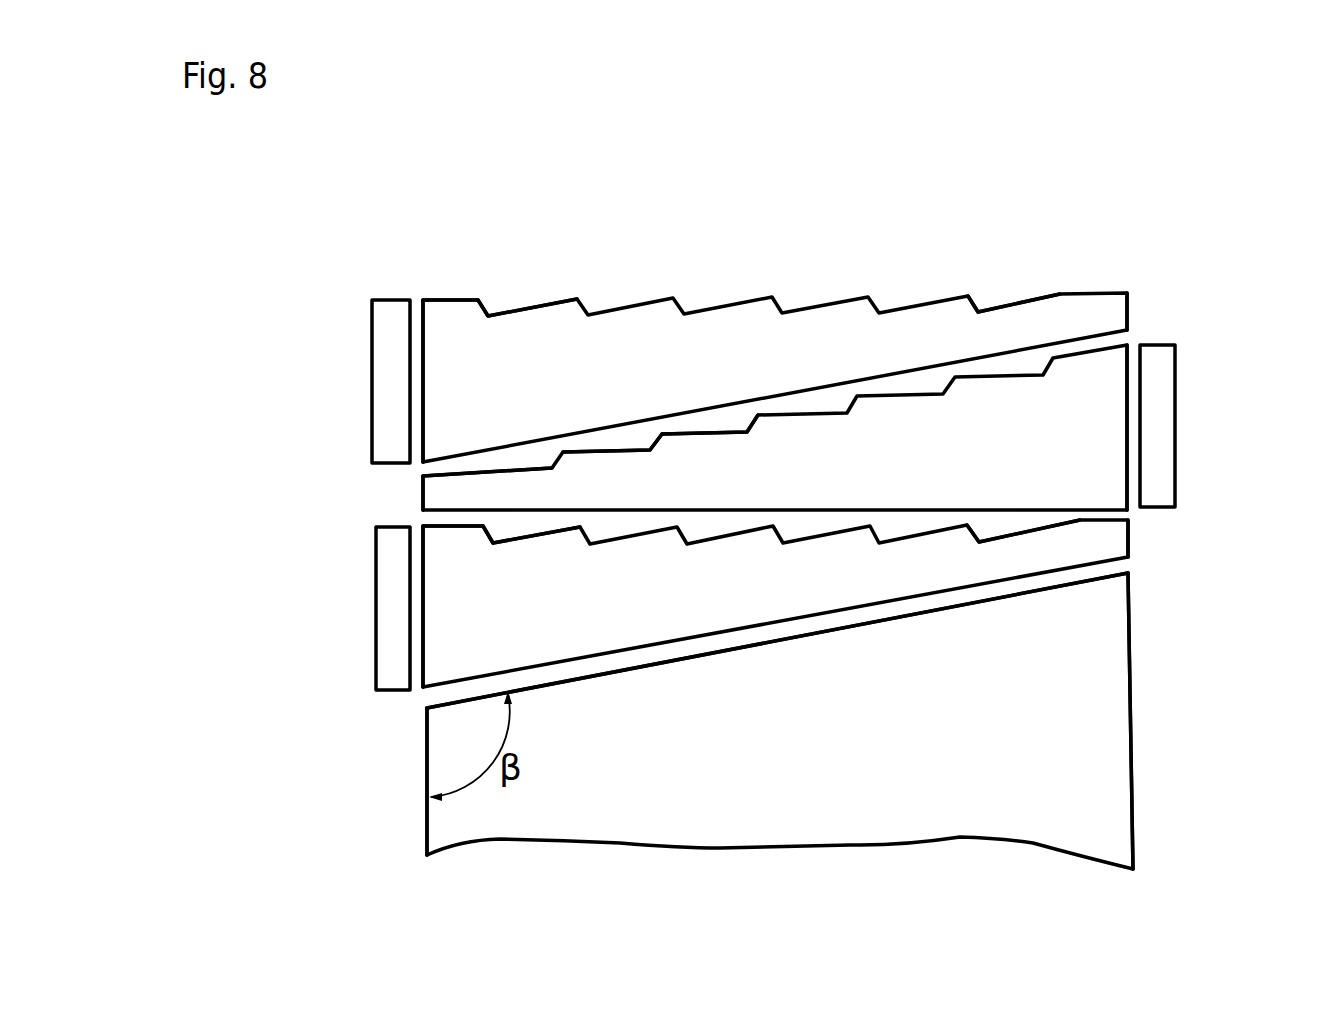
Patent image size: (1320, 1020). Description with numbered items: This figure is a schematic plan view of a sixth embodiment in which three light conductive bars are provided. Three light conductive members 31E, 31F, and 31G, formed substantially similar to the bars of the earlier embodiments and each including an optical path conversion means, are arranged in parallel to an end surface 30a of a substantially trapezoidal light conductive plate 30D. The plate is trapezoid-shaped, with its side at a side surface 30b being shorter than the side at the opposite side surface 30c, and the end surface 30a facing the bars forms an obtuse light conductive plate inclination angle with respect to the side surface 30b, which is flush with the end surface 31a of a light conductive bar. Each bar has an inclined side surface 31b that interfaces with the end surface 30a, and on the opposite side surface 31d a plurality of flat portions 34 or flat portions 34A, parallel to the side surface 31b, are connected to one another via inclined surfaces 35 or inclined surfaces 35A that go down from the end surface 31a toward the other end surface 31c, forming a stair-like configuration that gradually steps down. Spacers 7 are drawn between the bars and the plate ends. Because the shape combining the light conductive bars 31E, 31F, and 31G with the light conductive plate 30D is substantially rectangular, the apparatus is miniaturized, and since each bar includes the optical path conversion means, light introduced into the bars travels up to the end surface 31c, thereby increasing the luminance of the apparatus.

The spacer 7 is at (386, 325).
The light conductive plate 30D is at (1100, 788).
The end surface 30a is at (993, 600).
The side surface 30b is at (427, 822).
The side surface 30c is at (1131, 706).
The light conductive member 31G is at (465, 334).
The light conductive member 31F is at (1104, 440).
The light conductive member 31E is at (1101, 543).
The end surface 31a is at (420, 398).
The side surface 31b is at (815, 388).
The end surface 31c is at (1128, 310).
The side surface 31d is at (427, 297).
The flat portions 34 is at (545, 528).
The flat portions 34A is at (712, 431).
The inclined surfaces 35 is at (987, 525).
The inclined surfaces 35A is at (657, 438).